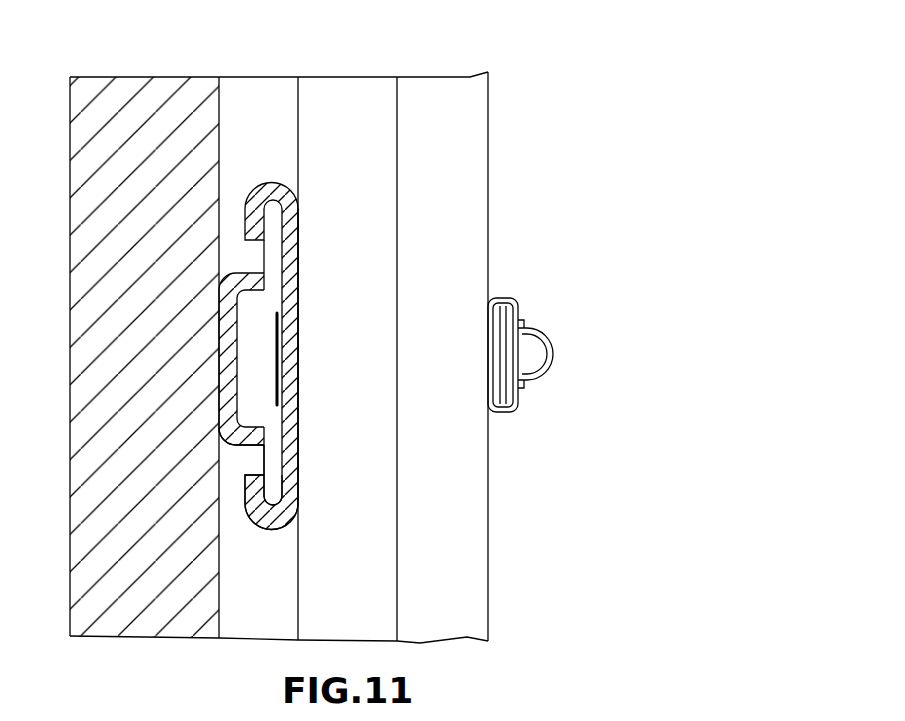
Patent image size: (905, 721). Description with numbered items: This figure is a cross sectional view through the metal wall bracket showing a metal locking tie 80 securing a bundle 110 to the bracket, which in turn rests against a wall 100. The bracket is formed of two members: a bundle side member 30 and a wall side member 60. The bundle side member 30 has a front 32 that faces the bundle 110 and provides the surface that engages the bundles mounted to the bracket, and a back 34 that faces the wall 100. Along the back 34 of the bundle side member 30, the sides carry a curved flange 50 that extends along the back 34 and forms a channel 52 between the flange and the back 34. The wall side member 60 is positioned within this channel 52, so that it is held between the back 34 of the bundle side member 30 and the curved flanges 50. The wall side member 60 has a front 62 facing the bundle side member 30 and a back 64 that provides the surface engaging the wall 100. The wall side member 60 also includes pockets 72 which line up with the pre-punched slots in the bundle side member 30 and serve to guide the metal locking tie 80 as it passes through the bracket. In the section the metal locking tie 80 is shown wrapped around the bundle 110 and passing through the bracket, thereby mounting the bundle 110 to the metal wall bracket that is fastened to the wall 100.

The wall 100 is at (163, 92).
The bundle 110 is at (463, 200).
The bundle side member 30 is at (293, 204).
The front 32 is at (298, 445).
The back 34 is at (297, 482).
The wall side member 60 is at (243, 255).
The front 62 is at (262, 452).
The back 64 is at (262, 468).
The curved flange 50 is at (245, 487).
The channel 52 is at (258, 527).
The pocket 72 is at (253, 361).
The metal locking tie 80 is at (513, 305).